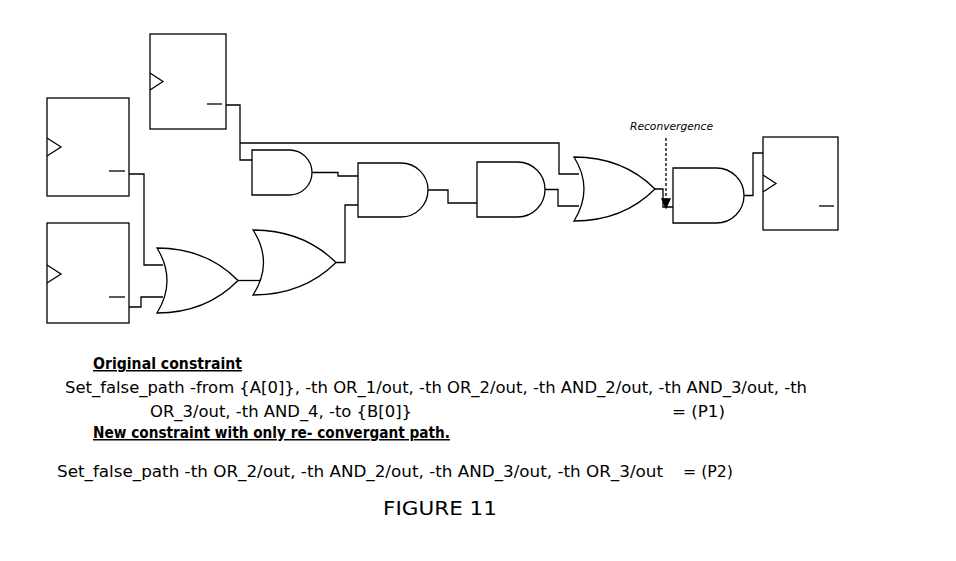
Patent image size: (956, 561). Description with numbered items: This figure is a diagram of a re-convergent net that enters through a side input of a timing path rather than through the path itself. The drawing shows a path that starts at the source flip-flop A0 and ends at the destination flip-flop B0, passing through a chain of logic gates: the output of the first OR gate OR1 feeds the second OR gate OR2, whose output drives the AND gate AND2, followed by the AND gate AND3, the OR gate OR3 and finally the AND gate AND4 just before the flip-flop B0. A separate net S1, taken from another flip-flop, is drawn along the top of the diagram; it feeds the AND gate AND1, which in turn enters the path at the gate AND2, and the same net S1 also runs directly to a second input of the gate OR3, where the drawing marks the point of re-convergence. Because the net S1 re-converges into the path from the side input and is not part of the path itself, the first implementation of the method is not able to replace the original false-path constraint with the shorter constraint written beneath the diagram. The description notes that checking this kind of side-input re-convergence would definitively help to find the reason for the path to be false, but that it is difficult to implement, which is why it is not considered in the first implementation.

The source flip-flop A[0] A0 is at (136, 187).
The destination flip-flop B[0] B0 is at (800, 192).
The net S1 is at (409, 145).
The AND gate 1 AND1 is at (282, 172).
The AND gate 2 AND2 is at (393, 190).
The AND gate 3 AND3 is at (511, 189).
The AND gate 4 AND4 is at (708, 195).
The OR gate 1 OR1 is at (197, 280).
The OR gate 2 OR2 is at (294, 262).
The OR gate 3 OR3 is at (614, 189).